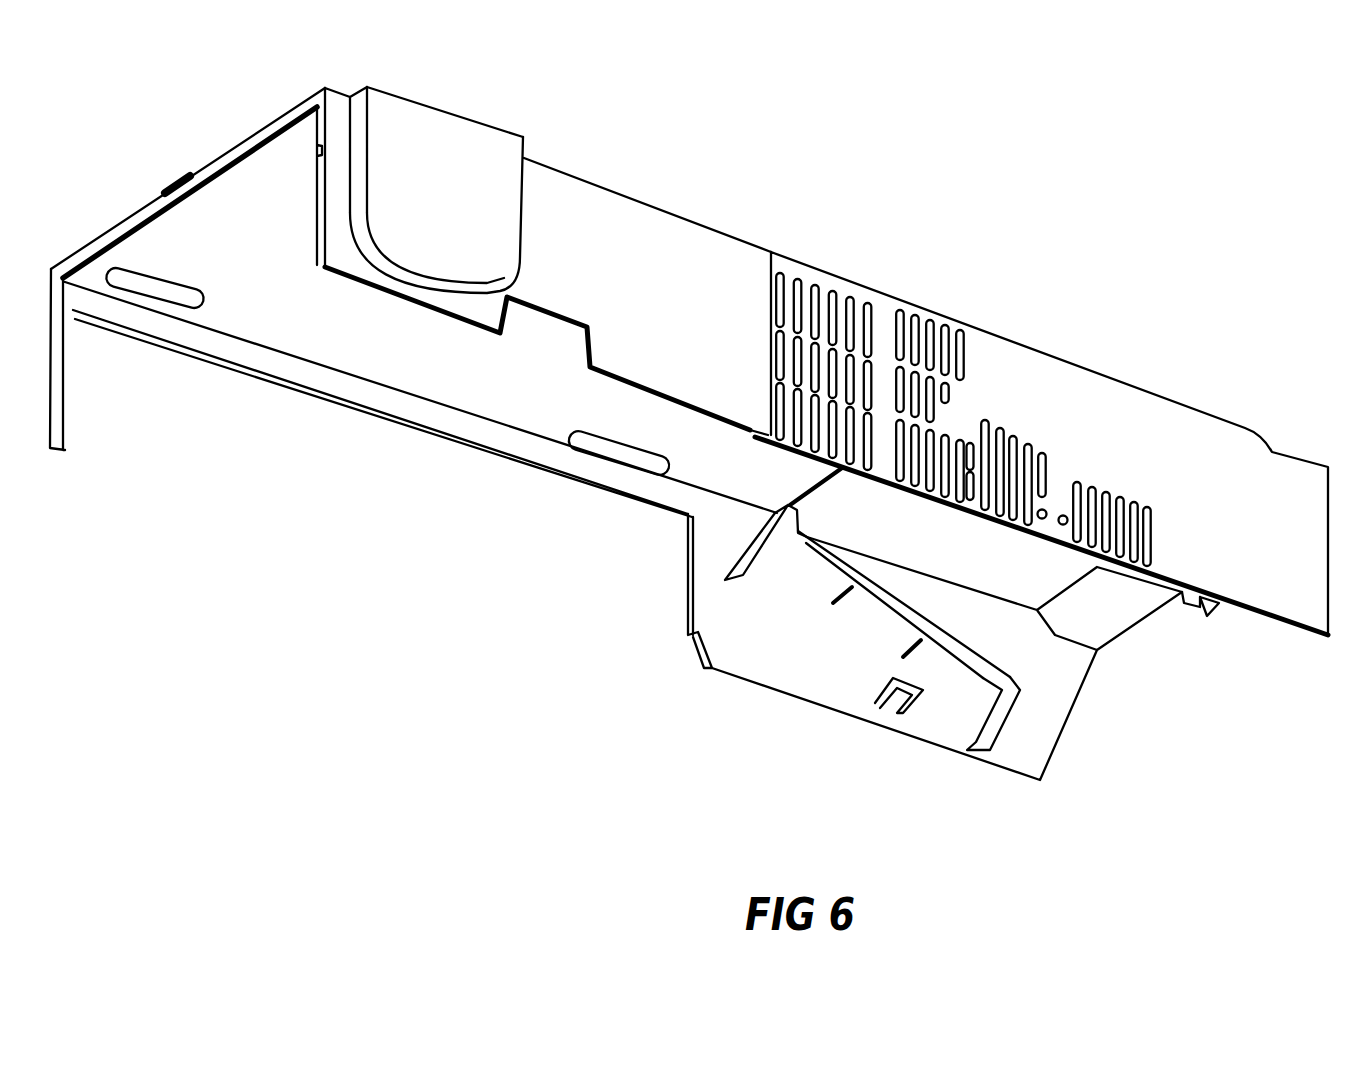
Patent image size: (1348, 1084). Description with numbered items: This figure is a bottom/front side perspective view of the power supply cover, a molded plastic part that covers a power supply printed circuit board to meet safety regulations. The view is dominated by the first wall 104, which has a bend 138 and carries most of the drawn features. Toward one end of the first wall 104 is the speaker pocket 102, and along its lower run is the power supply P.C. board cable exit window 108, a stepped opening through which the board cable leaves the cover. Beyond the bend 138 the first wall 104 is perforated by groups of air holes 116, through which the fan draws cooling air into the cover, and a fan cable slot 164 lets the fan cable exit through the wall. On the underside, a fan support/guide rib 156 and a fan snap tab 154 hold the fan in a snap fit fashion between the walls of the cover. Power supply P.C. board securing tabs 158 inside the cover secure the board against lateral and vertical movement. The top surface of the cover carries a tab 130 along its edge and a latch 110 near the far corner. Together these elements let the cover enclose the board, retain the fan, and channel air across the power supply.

The speaker pocket 102 is at (468, 128).
The first wall 104 is at (1175, 430).
The power supply P.C. board cable exit window 108 is at (550, 303).
The latch 110 is at (1215, 612).
The air holes 116 is at (921, 317).
The tab 130 is at (177, 187).
The bend 138 is at (773, 253).
The fan snap tab 154 is at (905, 716).
The fan support/guide ribs 156 is at (823, 595).
The power supply P.C. board securing tabs 158 is at (255, 435).
The fan cable slot 164 is at (940, 499).